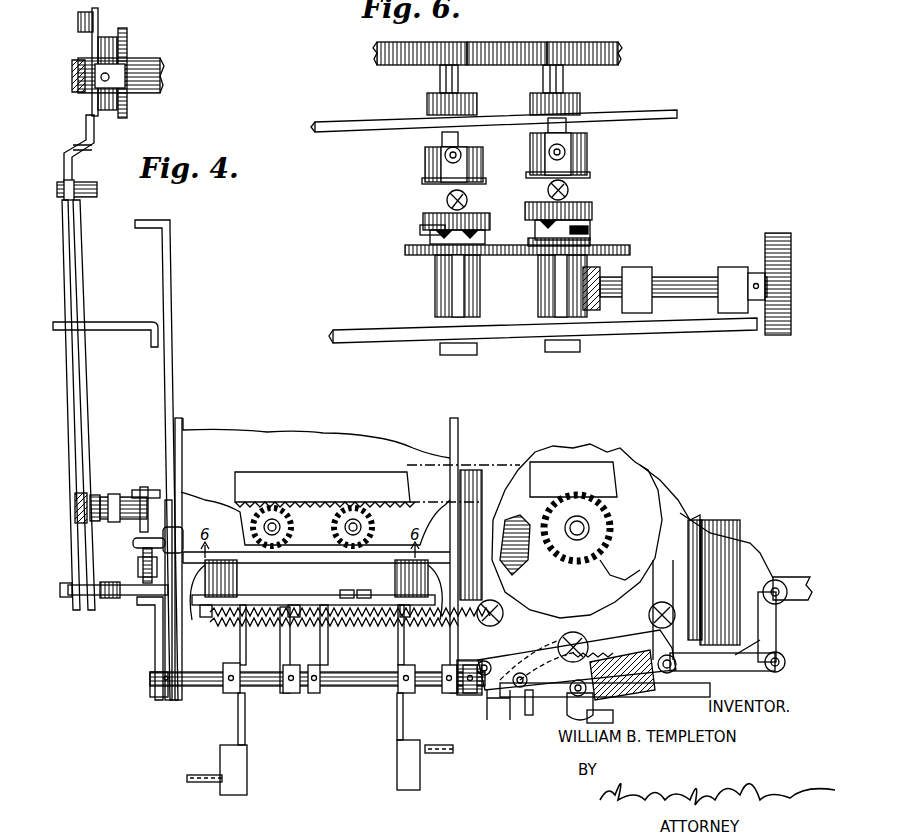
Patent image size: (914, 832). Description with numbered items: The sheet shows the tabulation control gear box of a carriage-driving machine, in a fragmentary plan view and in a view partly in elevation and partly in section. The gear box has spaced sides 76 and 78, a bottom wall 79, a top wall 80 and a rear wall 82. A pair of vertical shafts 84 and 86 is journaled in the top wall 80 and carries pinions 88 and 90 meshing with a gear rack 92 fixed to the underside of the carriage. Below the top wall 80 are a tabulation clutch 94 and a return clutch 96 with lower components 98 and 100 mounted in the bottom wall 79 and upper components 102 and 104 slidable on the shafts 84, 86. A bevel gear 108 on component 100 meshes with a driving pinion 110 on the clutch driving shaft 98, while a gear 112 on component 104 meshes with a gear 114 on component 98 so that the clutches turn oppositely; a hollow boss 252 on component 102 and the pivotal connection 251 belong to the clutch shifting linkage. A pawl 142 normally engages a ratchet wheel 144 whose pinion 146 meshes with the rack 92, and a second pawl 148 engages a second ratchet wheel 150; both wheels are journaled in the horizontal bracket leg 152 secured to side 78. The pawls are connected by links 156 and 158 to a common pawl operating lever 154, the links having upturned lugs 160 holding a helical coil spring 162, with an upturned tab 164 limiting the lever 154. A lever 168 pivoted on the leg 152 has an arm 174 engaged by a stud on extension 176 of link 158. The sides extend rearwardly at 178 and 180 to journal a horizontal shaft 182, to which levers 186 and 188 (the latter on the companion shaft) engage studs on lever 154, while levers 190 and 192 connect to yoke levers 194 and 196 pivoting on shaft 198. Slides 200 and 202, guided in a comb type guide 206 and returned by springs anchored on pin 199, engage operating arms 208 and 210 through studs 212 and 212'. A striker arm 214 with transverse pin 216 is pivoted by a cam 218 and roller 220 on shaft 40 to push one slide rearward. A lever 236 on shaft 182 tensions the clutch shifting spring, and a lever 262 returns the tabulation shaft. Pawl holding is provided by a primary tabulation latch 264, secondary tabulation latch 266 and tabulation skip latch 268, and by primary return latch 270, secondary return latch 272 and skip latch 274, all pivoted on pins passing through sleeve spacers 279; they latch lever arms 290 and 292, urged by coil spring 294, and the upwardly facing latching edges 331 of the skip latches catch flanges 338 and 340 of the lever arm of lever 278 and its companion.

In FIG. 4, the shaft 40 is at (160, 85).
In FIG. 4, the gear box side 76 is at (170, 262).
In FIG. 4, the gear box side 78 is at (458, 432).
In FIG. 6, the bottom wall 79 is at (512, 334).
In FIG. 6, the top wall 80 is at (634, 112).
In FIG. 4, the top wall 80 is at (268, 432).
In FIG. 4, the rear wall 82 is at (463, 484).
In FIG. 6, the vertical shaft 84 is at (458, 80).
In FIG. 6, the vertical shaft 86 is at (563, 80).
In FIG. 6, the pinion 88 is at (455, 42).
In FIG. 4, the pinion 88 is at (291, 528).
In FIG. 6, the pinion 90 is at (548, 42).
In FIG. 4, the pinion 90 is at (372, 526).
In FIG. 6, the gear rack 92 is at (612, 42).
In FIG. 4, the gear rack 92 is at (348, 480).
In FIG. 6, the tabulation clutch 94 is at (425, 218).
In FIG. 6, the return clutch 96 is at (595, 195).
In FIG. 6, the clutch driving shaft / lower clutch component 98 is at (410, 247).
In FIG. 6, the lower clutch component 100 is at (600, 233).
In FIG. 6, the upper clutch component 102 is at (420, 228).
In FIG. 6, the upper clutch component 104 is at (593, 206).
In FIG. 6, the bevel gear 108 is at (540, 270).
In FIG. 6, the driving pinion 110 is at (591, 305).
In FIG. 6, the gear 112 is at (598, 246).
In FIG. 6, the gear 114 is at (408, 260).
In FIG. 4, the retractable stop member or pawl 142 is at (615, 540).
In FIG. 4, the ratchet wheel 144 is at (636, 488).
In FIG. 4, the pinion 146 is at (592, 560).
In FIG. 4, the second retractable stop member or pawl 148 is at (515, 543).
In FIG. 4, the second ratchet wheel 150 is at (520, 468).
In FIG. 4, the horizontal bracket leg 152 is at (640, 690).
In FIG. 4, the pawl operating lever 154 is at (575, 720).
In FIG. 4, the link 156 is at (545, 652).
In FIG. 4, the link 158 is at (655, 686).
In FIG. 4, the upturned lug 160 is at (592, 668).
In FIG. 4, the helical coil spring 162 is at (588, 648).
In FIG. 4, the upturned tab 164 is at (613, 715).
In FIG. 4, the lever 168 is at (762, 600).
In FIG. 4, the lever arm 174 is at (770, 636).
In FIG. 4, the link extension 176 is at (730, 673).
In FIG. 4, the gear box side extension 178 is at (175, 698).
In FIG. 4, the gear box side extension 180 is at (462, 694).
In FIG. 4, the horizontal shaft (return shaft) 182 is at (266, 690).
In FIG. 4, the lever 186 is at (530, 700).
In FIG. 4, the lever 188 is at (507, 705).
In FIG. 4, the lever 190 is at (155, 628).
In FIG. 4, the lever 192 is at (165, 648).
In FIG. 4, the yoke lever 194 is at (138, 562).
In FIG. 4, the yoke lever 196 is at (133, 541).
In FIG. 4, the shaft 198 is at (144, 487).
In FIG. 4, the pin 199 is at (170, 527).
In FIG. 4, the slide 200 is at (66, 353).
In FIG. 4, the slide 202 is at (82, 380).
In FIG. 4, the comb type guide 206 is at (108, 322).
In FIG. 4, the operating arm 208 is at (78, 522).
In FIG. 4, the operating arm 210 is at (108, 497).
In FIG. 4, the stud 212 is at (65, 483).
In FIG. 4, the stud 212' is at (110, 482).
In FIG. 4, the striker arm 214 is at (94, 143).
In FIG. 4, the transversely extending pin 216 is at (62, 186).
In FIG. 4, the cam 218 is at (92, 48).
In FIG. 4, the roller 220 is at (78, 20).
In FIG. 4, the lever 236 is at (322, 662).
In FIG. 6, the pivotal connection 251 is at (468, 178).
In FIG. 6, the hollow boss 252 is at (470, 195).
In FIG. 4, the lever 262 is at (330, 660).
In FIG. 4, the primary tabulation latch 264 is at (247, 598).
In FIG. 4, the secondary tabulation latch 266 is at (270, 606).
In FIG. 4, the tabulation skip latch 268 is at (205, 775).
In FIG. 4, the primary return latch 270 is at (377, 600).
In FIG. 4, the secondary return latch 272 is at (346, 587).
In FIG. 4, the tabulation skip latch 274 is at (440, 738).
In FIG. 4, the lever 278 is at (397, 712).
In FIG. 4, the sleeve spacer 279 is at (319, 607).
In FIG. 4, the lever arm 290 is at (240, 655).
In FIG. 4, the lever arm 292 is at (404, 652).
In FIG. 4, the coil spring 294 is at (258, 628).
In FIG. 4, the upwardly facing latching edge 331 is at (220, 782).
In FIG. 4, the flange 338 is at (247, 770).
In FIG. 4, the flange 340 is at (420, 772).